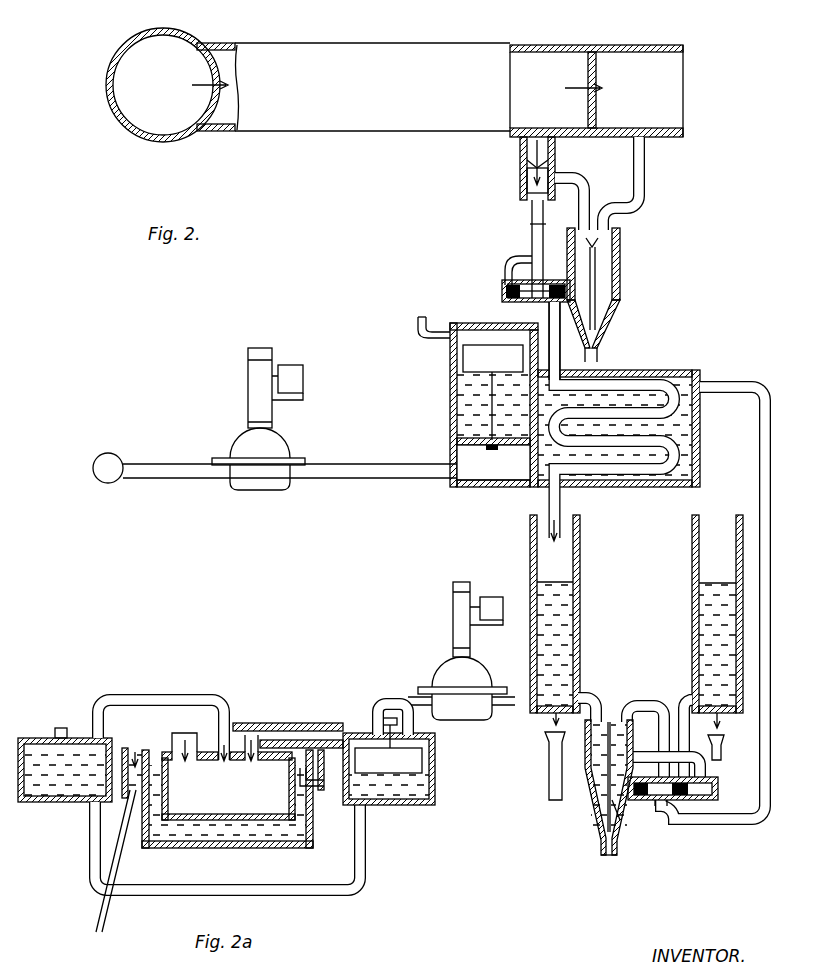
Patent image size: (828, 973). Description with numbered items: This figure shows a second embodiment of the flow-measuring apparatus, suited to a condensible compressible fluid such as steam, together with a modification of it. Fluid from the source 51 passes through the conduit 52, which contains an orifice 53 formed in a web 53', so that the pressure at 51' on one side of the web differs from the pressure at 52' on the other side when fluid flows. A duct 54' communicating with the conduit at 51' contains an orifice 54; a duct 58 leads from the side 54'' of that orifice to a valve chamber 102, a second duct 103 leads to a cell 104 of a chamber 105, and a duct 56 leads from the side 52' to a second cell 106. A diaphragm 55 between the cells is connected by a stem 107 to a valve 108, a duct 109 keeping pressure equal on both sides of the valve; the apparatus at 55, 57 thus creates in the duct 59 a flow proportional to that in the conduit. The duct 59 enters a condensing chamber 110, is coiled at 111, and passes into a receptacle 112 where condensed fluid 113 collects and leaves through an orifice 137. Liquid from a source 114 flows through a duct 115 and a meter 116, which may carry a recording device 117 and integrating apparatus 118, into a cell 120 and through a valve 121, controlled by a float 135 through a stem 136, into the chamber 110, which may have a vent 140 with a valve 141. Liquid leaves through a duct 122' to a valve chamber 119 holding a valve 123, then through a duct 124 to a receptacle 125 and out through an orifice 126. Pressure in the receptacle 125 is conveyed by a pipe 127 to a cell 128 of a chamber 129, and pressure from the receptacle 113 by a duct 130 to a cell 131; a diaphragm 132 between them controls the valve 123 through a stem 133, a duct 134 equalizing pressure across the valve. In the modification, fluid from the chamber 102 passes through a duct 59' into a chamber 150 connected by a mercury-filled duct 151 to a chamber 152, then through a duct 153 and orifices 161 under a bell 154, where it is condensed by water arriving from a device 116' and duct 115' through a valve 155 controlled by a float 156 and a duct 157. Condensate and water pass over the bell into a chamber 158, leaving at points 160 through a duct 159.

In FIG. 2, the source of fluid 51 is at (167, 85).
In FIG. 2, the conduit 52 is at (353, 103).
In FIG. 2, the side of web 51' is at (596, 91).
In FIG. 2, the side of orifice 52' is at (651, 91).
In FIG. 2, the orifice 53 is at (567, 102).
In FIG. 2, the web 53' is at (613, 90).
In FIG. 2, the orifice 54 is at (560, 158).
In FIG. 2, the duct 54' is at (500, 168).
In FIG. 2, the side of orifice 54'' is at (499, 188).
In FIG. 2, the movable member 55 is at (600, 284).
In FIG. 2, the duct 56 is at (648, 178).
In FIG. 2, the apparatus 57 is at (500, 300).
In FIG. 2, the duct 58 is at (530, 240).
In FIG. 2, the duct 59 is at (567, 421).
In FIG. 2, the valve chamber 102 is at (520, 302).
In FIG. 2, the second duct 103 is at (588, 200).
In FIG. 2, the cell 104 is at (531, 224).
In FIG. 2, the chamber 105 is at (608, 330).
In FIG. 2, the second cell 106 is at (622, 242).
In FIG. 2, the stem 107 is at (600, 296).
In FIG. 2, the valve 108 is at (505, 290).
In FIG. 2, the duct 109 is at (503, 271).
In FIG. 2, the condensing chamber 110 is at (638, 370).
In FIG. 2, the coil 111 is at (625, 460).
In FIG. 2, the receptacle 112 is at (528, 556).
In FIG. 2, the condensed fluid 113 is at (528, 640).
In FIG. 2, the source of liquid 114 is at (118, 456).
In FIG. 2, the duct 115 is at (290, 488).
In FIG. 2, the duct 115' is at (433, 670).
In FIG. 2, the meter 116 is at (258, 475).
In FIG. 2, the device 116' is at (462, 704).
In FIG. 2, the recording device 117 is at (303, 380).
In FIG. 2, the integrating apparatus 118 is at (284, 337).
In FIG. 2, the valve chamber 119 is at (712, 790).
In FIG. 2, the cell 120 is at (470, 486).
In FIG. 2, the valve 121 is at (496, 444).
In FIG. 2, the duct 122' is at (713, 603).
In FIG. 2, the valve 123 is at (664, 806).
In FIG. 2, the duct 124 is at (680, 700).
In FIG. 2, the receptacle 125 is at (700, 626).
In FIG. 2, the orifice 126 is at (734, 736).
In FIG. 2, the pipe 127 is at (650, 704).
In FIG. 2, the cell 128 is at (616, 830).
In FIG. 2, the chamber 129 is at (606, 850).
In FIG. 2, the duct 130 is at (586, 690).
In FIG. 2, the cell 131 is at (588, 790).
In FIG. 2, the diaphragm 132 is at (606, 800).
In FIG. 2, the stem 133 is at (622, 812).
In FIG. 2, the duct 134 is at (648, 752).
In FIG. 2, the float 135 is at (448, 374).
In FIG. 2, the stem 136 is at (502, 392).
In FIG. 2, the orifice 137 is at (548, 728).
In FIG. 2, the vent 140 is at (416, 330).
In FIG. 2, the valve 141 is at (425, 340).
In FIG. 2A, the chamber 150 is at (44, 728).
In FIG. 2A, the duct 59' is at (79, 708).
In FIG. 2A, the duct 151 is at (152, 896).
In FIG. 2A, the chamber 152 is at (436, 792).
In FIG. 2A, the duct 153 is at (172, 700).
In FIG. 2A, the bell 154 is at (228, 776).
In FIG. 2A, the valve 155 is at (378, 716).
In FIG. 2A, the float 156 is at (388, 745).
In FIG. 2A, the duct 157 is at (290, 722).
In FIG. 2A, the chamber 158 is at (196, 848).
In FIG. 2A, the duct 159 is at (98, 924).
In FIG. 2A, the points 160 is at (140, 744).
In FIG. 2A, the orifices 161 is at (254, 732).